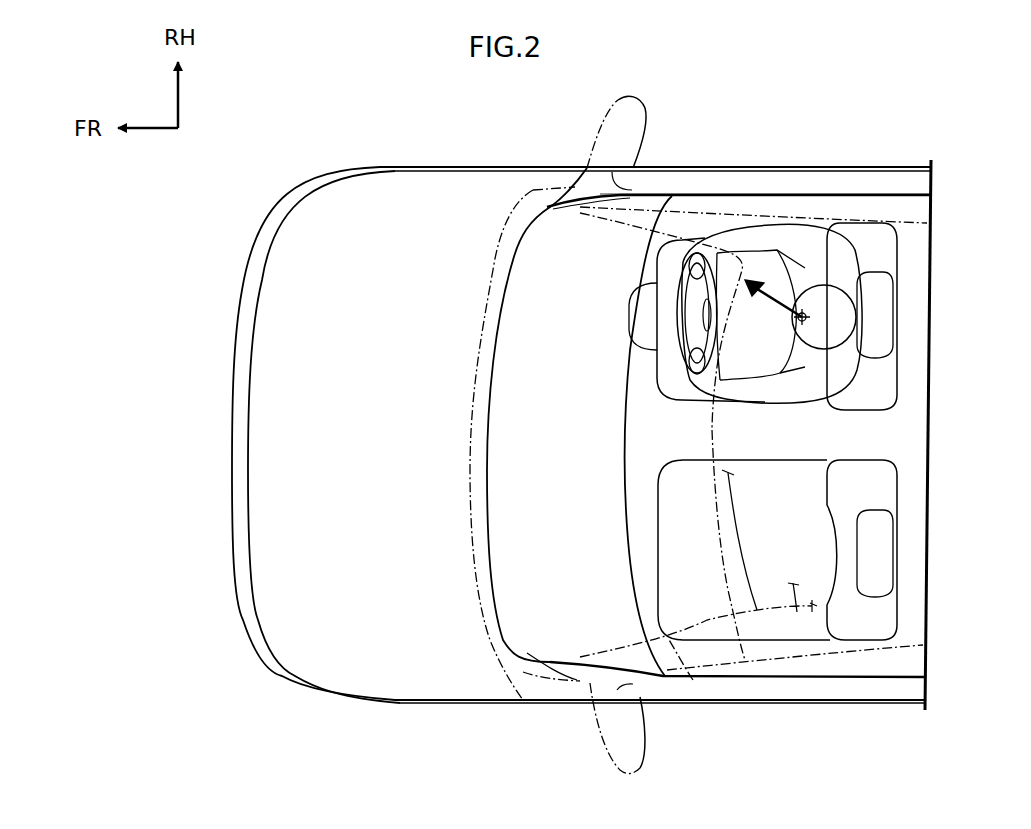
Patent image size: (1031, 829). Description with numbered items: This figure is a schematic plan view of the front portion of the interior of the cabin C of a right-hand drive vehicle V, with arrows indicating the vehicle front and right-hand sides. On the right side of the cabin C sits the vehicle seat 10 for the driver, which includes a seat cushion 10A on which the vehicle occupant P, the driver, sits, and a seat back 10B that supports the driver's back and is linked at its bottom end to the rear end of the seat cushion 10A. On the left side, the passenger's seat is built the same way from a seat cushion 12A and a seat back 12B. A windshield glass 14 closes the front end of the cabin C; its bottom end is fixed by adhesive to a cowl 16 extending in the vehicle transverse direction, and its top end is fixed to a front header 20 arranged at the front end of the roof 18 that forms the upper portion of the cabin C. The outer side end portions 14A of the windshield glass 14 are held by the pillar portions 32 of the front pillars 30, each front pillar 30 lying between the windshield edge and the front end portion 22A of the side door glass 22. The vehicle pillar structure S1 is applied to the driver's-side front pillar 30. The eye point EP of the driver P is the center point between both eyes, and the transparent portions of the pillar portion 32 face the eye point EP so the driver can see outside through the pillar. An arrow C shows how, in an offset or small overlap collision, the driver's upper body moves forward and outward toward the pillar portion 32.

The vehicle seat 10 is at (898, 362).
The seat cushion 10A is at (680, 402).
The seat back 10B is at (896, 382).
The seat cushion 12A is at (770, 458).
The seat back 12B is at (895, 498).
The windshield glass 14 is at (523, 700).
The vehicle transverse direction outer side end portion 14A is at (603, 220).
The cowl 16 is at (470, 424).
The roof 18 is at (797, 612).
The front header 20 is at (745, 660).
The side door glass 22 is at (807, 198).
The front end portion 22A is at (727, 196).
The front pillar 30 is at (698, 416).
The pillar portion 32 is at (677, 212).
The vehicle V is at (882, 166).
The vehicle occupant P is at (850, 257).
The eye point EP is at (810, 316).
The cabin C is at (887, 428).
The vehicle pillar structure S1 is at (707, 184).